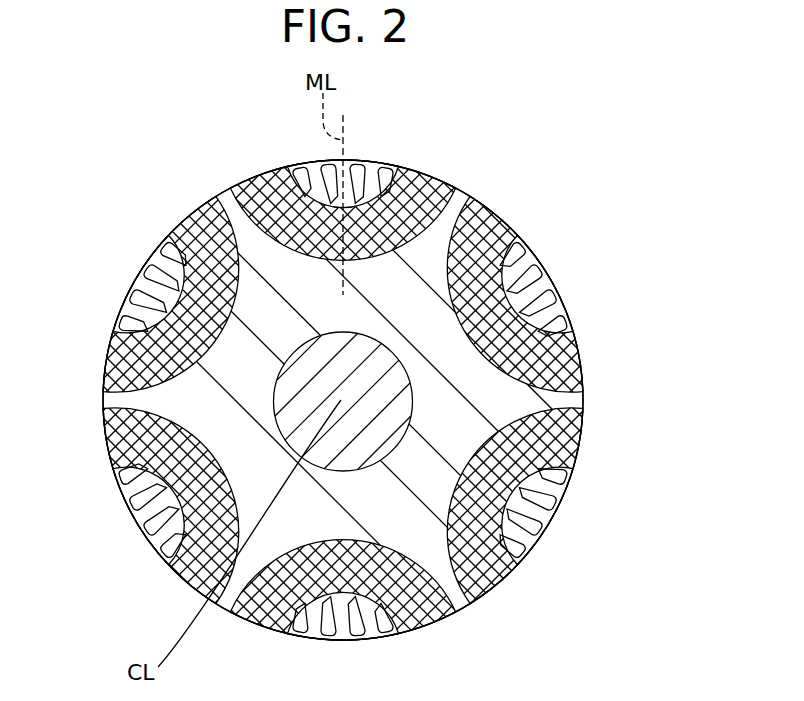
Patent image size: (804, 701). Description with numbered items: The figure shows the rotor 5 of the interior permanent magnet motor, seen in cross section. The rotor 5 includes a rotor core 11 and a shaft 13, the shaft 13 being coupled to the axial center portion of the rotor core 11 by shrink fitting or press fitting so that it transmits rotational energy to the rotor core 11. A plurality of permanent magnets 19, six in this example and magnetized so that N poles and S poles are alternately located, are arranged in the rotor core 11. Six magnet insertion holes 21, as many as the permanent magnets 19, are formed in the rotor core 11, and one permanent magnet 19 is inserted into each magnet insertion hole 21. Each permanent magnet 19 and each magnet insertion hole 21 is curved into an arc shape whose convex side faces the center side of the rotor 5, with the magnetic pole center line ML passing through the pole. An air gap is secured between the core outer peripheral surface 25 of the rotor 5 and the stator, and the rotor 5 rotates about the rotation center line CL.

The rotor 5 is at (50, 177).
The rotor core 11 is at (258, 295).
The shaft 13 is at (497, 590).
The permanent magnet 19 is at (487, 218).
The magnet insertion hole 21 is at (577, 362).
The core outer peripheral surface 25 is at (378, 432).